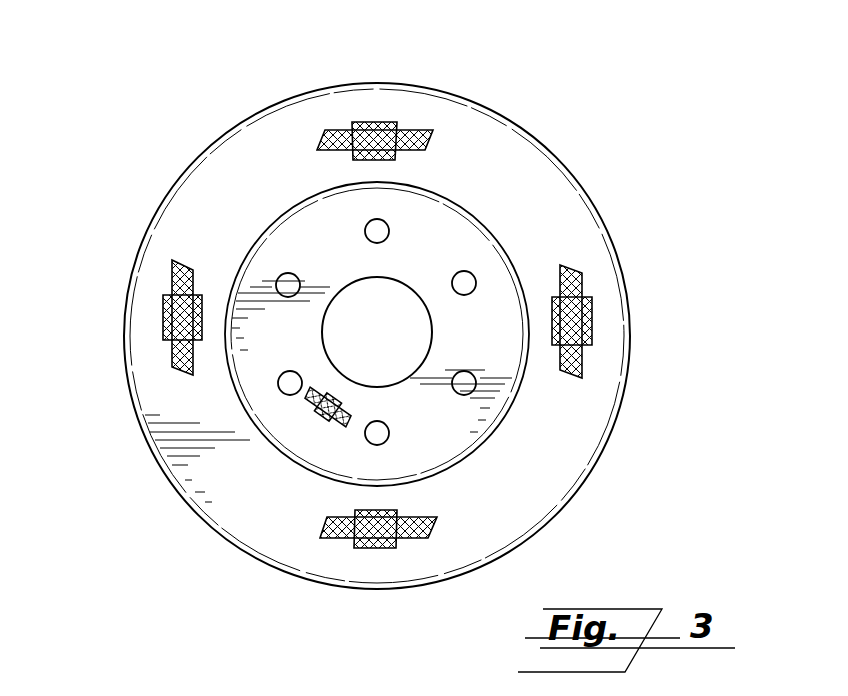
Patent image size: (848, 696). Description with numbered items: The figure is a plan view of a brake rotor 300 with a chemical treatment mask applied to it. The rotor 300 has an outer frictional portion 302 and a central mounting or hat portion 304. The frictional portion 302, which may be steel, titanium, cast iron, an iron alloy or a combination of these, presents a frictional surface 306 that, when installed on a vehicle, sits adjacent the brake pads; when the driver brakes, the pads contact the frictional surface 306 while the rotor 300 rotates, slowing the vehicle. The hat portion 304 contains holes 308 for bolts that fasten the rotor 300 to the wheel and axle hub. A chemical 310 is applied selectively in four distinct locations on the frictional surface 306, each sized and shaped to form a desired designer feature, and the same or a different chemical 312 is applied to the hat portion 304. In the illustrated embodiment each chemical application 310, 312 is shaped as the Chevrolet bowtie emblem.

The rotor 300 is at (603, 513).
The frictional portion 302 is at (163, 197).
The hat portion 304 is at (467, 212).
The frictional surface 306 is at (238, 168).
The holes 308 is at (462, 276).
The chemical 310 is at (413, 130).
The chemical applied to the hat portion 312 is at (313, 408).